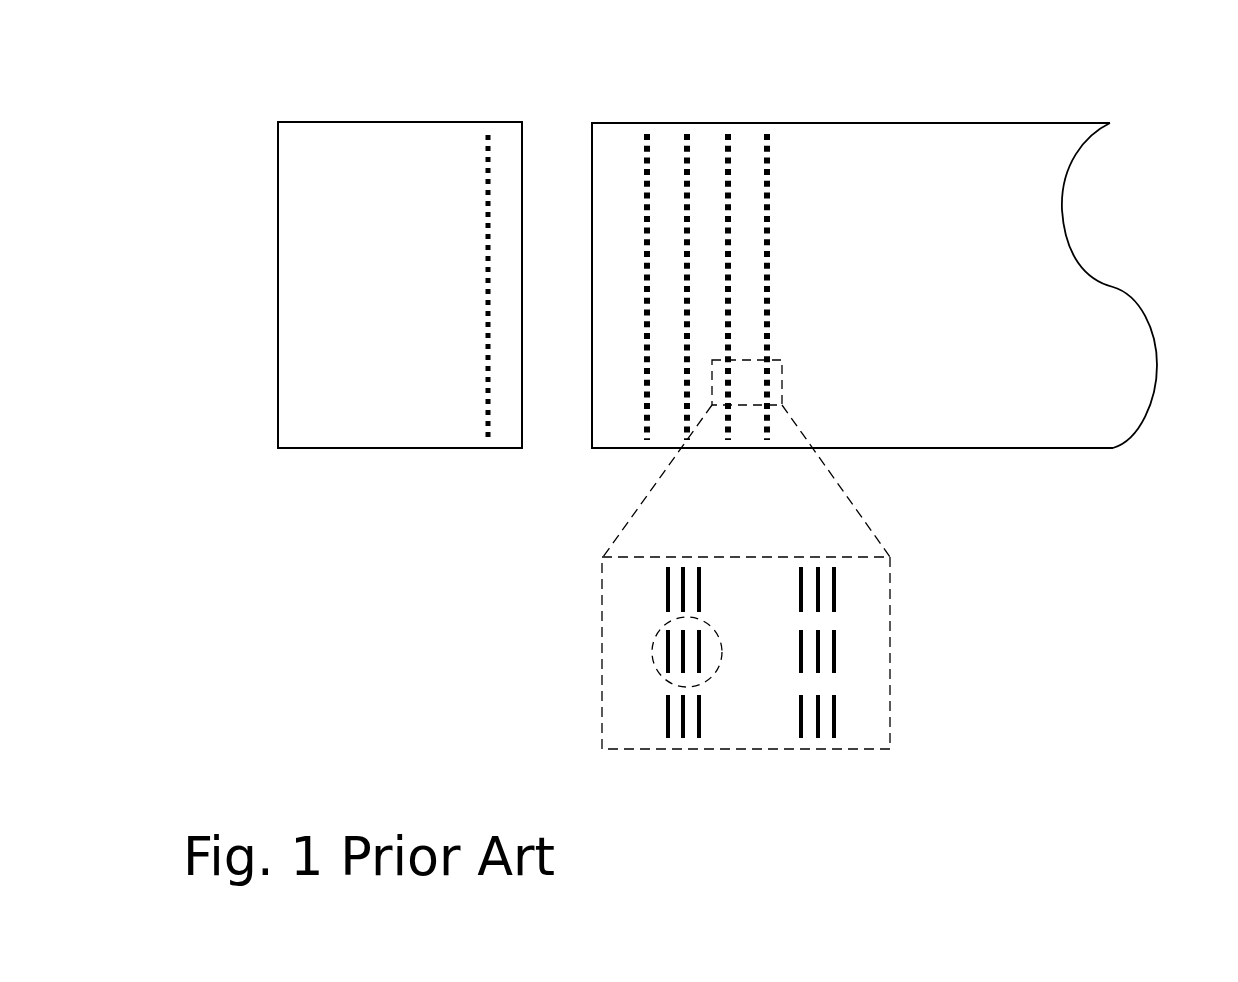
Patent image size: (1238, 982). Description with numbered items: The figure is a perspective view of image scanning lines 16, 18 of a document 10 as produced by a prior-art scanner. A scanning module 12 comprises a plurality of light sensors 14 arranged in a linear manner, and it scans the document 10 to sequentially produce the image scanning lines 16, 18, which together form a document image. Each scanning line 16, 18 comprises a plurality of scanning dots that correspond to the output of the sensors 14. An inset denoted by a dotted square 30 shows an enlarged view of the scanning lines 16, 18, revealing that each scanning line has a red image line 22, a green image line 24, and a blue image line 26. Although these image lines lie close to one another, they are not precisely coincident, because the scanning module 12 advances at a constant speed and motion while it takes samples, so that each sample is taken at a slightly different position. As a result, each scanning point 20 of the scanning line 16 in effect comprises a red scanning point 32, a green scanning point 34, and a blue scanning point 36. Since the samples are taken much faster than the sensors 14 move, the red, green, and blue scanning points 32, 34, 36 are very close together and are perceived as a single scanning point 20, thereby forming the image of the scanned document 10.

The document 10 is at (1025, 215).
The scanning module 12 is at (347, 122).
The light sensors 14 is at (488, 135).
The image scanning line 16 is at (728, 134).
The image scanning line 18 is at (768, 134).
The scanning point 20 is at (725, 377).
The red image line 22 is at (667, 738).
The green image line 24 is at (683, 738).
The blue image line 26 is at (700, 738).
The dotted square 30 is at (890, 655).
The red scanning point 32 is at (667, 652).
The green scanning point 34 is at (682, 673).
The blue scanning point 36 is at (702, 657).